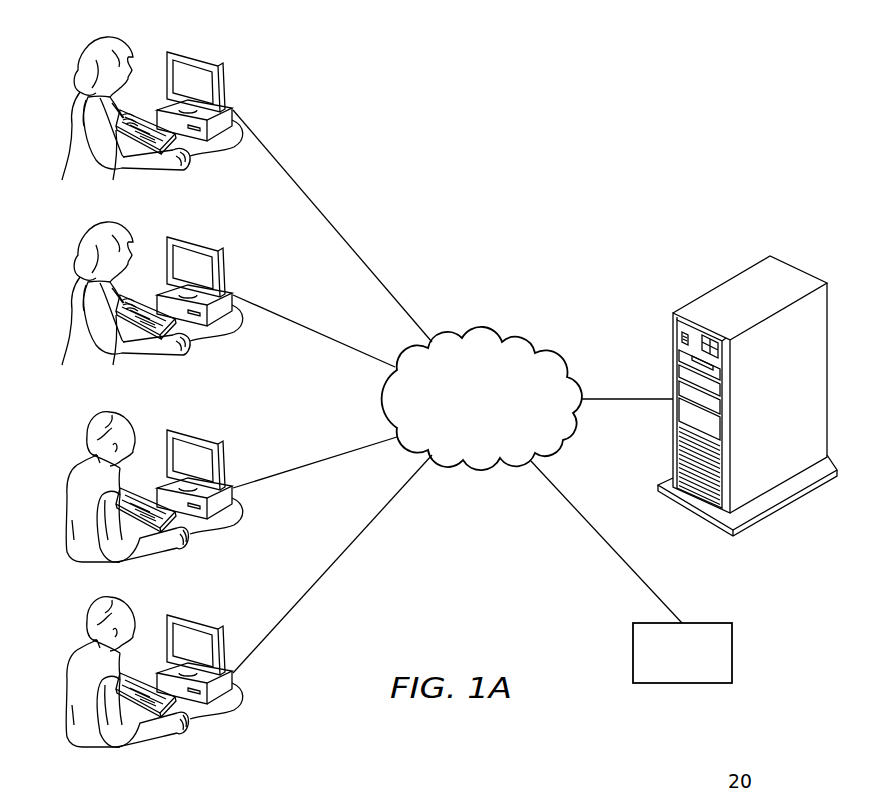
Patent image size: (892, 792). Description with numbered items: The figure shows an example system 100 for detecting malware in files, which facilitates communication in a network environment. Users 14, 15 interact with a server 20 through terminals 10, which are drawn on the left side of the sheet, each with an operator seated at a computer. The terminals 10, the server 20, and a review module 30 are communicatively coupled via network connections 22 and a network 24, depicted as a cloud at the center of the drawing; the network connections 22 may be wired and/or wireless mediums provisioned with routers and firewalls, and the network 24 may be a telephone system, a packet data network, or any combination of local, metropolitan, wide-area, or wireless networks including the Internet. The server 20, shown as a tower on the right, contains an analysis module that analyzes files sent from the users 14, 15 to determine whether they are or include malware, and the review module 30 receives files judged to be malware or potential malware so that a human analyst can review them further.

The terminal 10 is at (223, 638).
The user 14 is at (75, 108).
The user 15 is at (83, 545).
The server 20 is at (727, 281).
The network connection 22 is at (333, 225).
The network 24 is at (480, 328).
The review module 30 is at (732, 652).
The system 100 is at (561, 205).